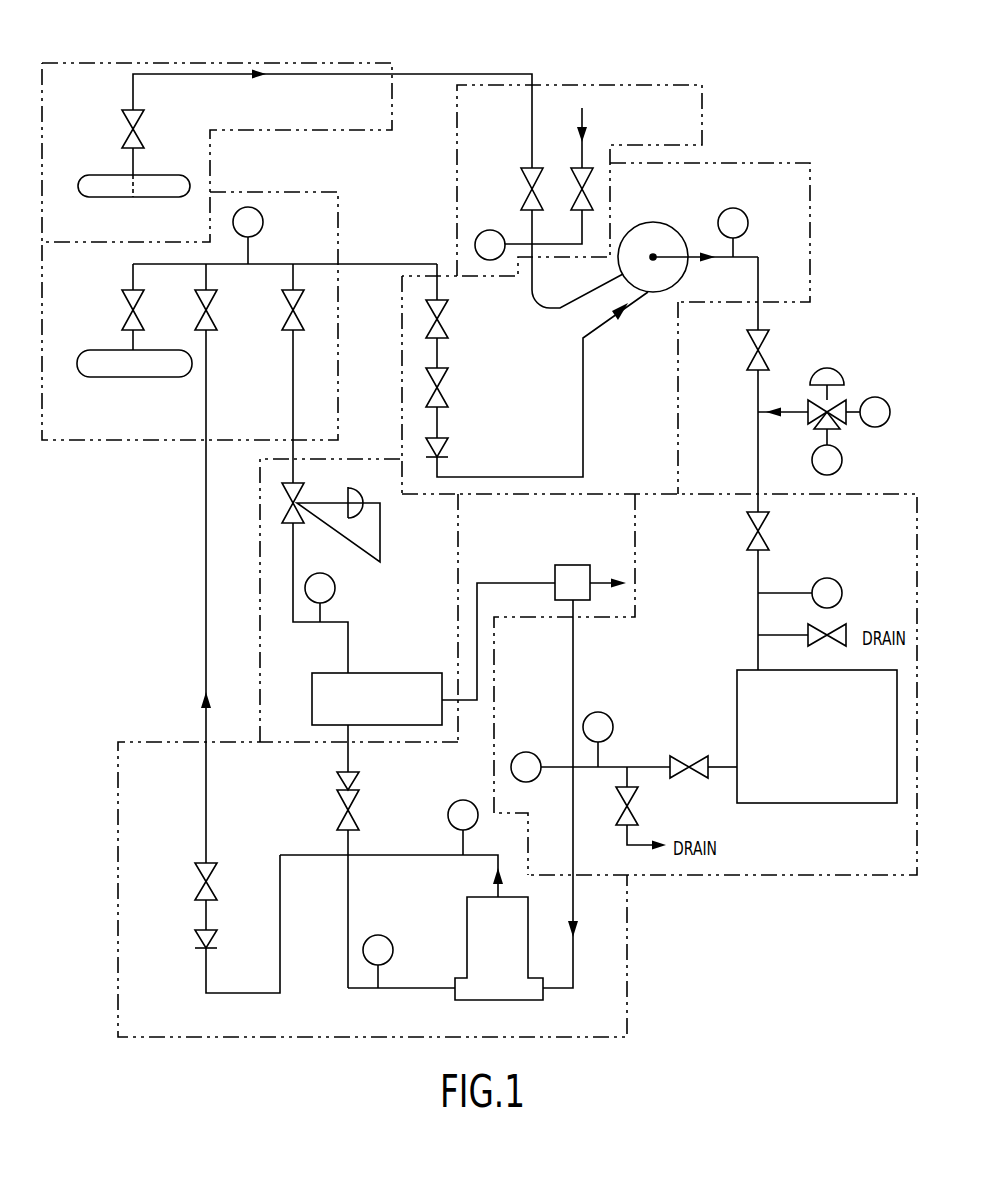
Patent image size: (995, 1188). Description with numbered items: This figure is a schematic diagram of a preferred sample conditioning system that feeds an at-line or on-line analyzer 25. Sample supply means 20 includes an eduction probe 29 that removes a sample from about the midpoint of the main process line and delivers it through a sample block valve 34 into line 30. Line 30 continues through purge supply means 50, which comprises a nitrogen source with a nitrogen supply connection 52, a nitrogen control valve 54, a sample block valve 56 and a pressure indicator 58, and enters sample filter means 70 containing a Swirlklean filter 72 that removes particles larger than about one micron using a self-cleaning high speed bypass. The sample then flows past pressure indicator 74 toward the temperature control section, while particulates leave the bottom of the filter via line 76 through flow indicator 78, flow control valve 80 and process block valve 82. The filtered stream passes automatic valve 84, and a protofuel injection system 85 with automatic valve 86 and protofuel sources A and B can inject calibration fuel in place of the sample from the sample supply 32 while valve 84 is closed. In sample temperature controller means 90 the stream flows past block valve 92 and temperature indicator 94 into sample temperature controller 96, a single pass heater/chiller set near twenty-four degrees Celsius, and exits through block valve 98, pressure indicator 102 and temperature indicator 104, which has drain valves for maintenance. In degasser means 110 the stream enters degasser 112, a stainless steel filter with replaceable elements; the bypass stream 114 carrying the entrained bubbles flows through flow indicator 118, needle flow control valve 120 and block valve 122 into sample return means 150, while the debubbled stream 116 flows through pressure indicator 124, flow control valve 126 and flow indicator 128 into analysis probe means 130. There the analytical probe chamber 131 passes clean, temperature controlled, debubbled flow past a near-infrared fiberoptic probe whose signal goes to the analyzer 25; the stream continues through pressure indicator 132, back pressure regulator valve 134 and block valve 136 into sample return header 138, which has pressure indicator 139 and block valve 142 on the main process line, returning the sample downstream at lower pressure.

The sample supply means 20 is at (228, 49).
The analyzer 25 is at (585, 596).
The eduction probe 29 is at (160, 178).
The line 30 is at (133, 90).
The sample supply 32 is at (103, 175).
The sample block valve 34 is at (143, 127).
The purge supply means 50 is at (628, 67).
The purge nitrogen supply line 52 is at (580, 124).
The nitrogen control valve 54 is at (575, 192).
The sample block valve 56 is at (520, 190).
The pressure indicator 58 is at (475, 238).
The sample filter means 70 is at (770, 143).
The filter 72 is at (690, 266).
The pressure indicator 74 is at (746, 214).
The line 76 is at (584, 395).
The flow indicator 78 is at (425, 448).
The flow control valve 80 is at (450, 388).
The process block valve 82 is at (450, 319).
The automatic valve 84 is at (748, 351).
The protofuel injection system 85 is at (778, 388).
The automatic valve 86 is at (848, 376).
The sample temperature controller means 90 is at (905, 474).
The block valve 92 is at (771, 531).
The temperature indicator 94 is at (838, 582).
The sample temperature controller 96 is at (800, 803).
The block valve 98 is at (689, 756).
The pressure indicator 102 is at (600, 712).
The temperature indicator 104 is at (526, 752).
The degasser means 110 is at (177, 727).
The degasser 112 is at (467, 915).
The bypass stream 114 is at (483, 855).
The debubbled stream 116 is at (418, 990).
The flow indicator 118 is at (195, 938).
The needle flow control valve 120 is at (195, 883).
The block valve 122 is at (215, 308).
The pressure indicator 124 is at (380, 935).
The flow control valve 126 is at (338, 812).
The flow indicator 128 is at (340, 781).
The analysis probe means 130 is at (252, 488).
The analytical probe chamber 131 is at (400, 673).
The pressure indicator 132 is at (336, 589).
The back pressure regulator valve 134 is at (282, 502).
The block valve 136 is at (305, 310).
The sample return header 138 is at (205, 264).
The pressure indicator 139 is at (264, 223).
The block valve 142 is at (122, 310).
The sample return means 150 is at (322, 177).